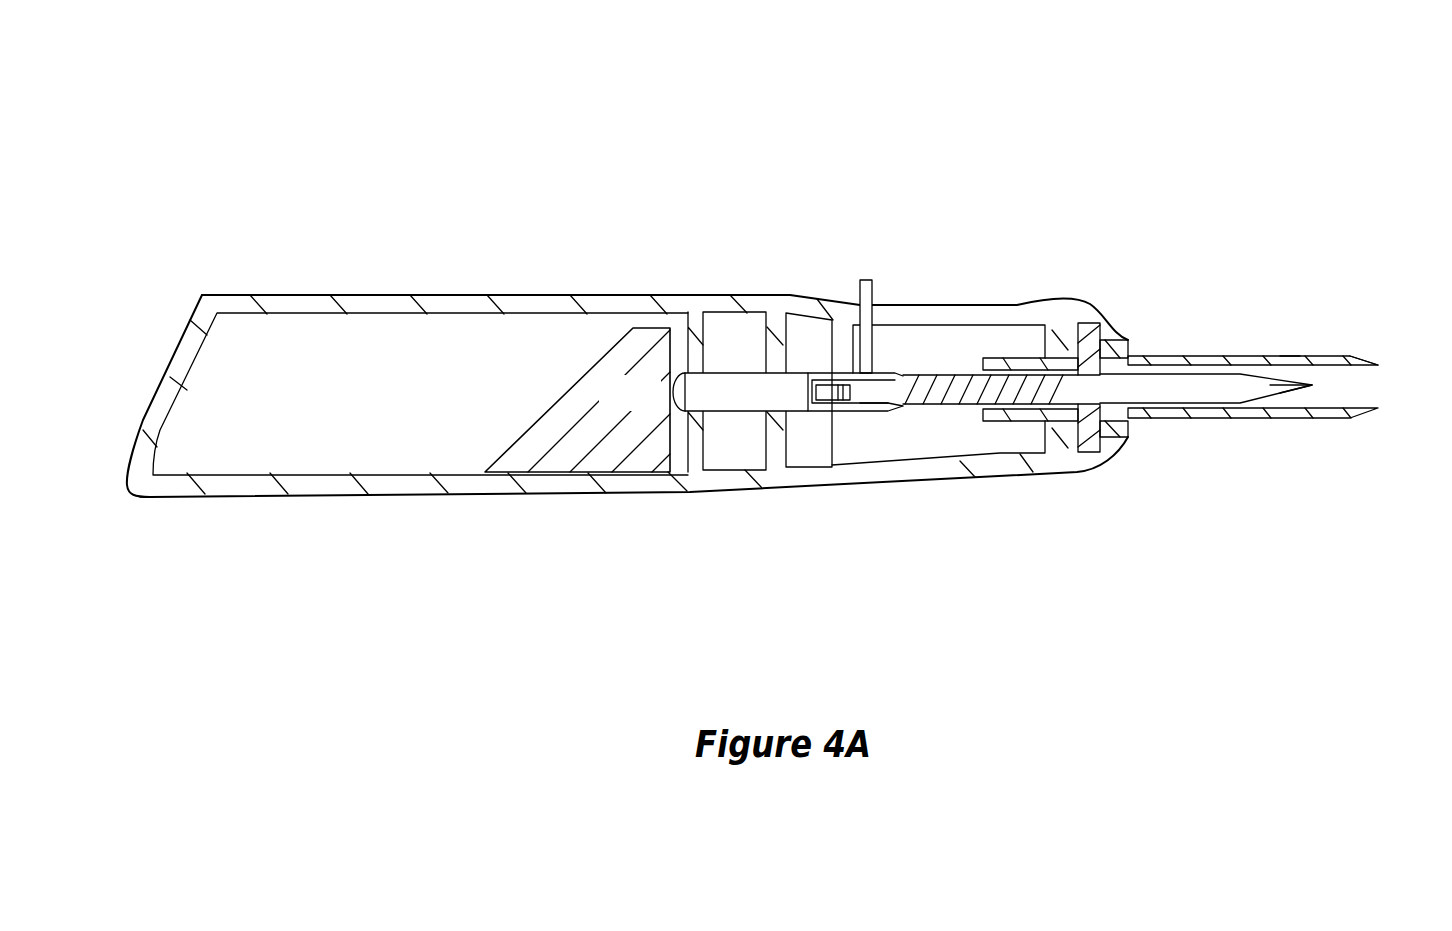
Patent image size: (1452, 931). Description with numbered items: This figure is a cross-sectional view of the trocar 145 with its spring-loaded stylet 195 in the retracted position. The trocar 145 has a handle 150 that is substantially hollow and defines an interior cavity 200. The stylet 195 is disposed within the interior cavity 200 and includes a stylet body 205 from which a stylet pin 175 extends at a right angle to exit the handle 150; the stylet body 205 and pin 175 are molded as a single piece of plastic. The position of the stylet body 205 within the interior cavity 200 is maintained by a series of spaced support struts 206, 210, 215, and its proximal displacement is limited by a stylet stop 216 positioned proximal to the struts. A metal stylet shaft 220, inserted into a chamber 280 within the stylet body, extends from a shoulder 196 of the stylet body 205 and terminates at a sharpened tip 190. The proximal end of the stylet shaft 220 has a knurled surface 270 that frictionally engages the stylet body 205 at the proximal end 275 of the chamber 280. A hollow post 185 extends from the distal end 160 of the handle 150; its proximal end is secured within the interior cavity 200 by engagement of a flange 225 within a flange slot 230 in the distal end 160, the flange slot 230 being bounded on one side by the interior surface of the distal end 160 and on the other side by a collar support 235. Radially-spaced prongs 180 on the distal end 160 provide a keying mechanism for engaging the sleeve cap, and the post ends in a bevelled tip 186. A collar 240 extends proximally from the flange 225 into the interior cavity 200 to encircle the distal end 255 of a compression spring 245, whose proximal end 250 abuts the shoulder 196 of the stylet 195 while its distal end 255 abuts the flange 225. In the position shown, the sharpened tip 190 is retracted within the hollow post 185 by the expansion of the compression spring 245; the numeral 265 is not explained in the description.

The trocar 145 is at (953, 152).
The handle 150 is at (392, 294).
The distal end 160 is at (1113, 447).
The pin 175 is at (868, 282).
The prongs 180 is at (1132, 342).
The hollow post 185 is at (1290, 355).
The bevelled tip 186 is at (1365, 358).
The sharpened tip 190 is at (1293, 393).
The spring-loaded stylet 195 is at (1208, 364).
The shoulder 196 is at (862, 410).
The interior cavity 200 is at (341, 410).
The stylet body 205 is at (759, 406).
The support strut 206 is at (698, 463).
The support strut 210 is at (775, 322).
The support strut 215 is at (843, 343).
The stylet stop 216 is at (655, 408).
The stylet shaft 220 is at (1190, 387).
The flange 225 is at (1088, 323).
The flange slot 230 is at (1087, 447).
The collar support 235 is at (1065, 445).
The collar 240 is at (988, 422).
The compression spring 245 is at (937, 374).
The proximal end of spring 250 is at (898, 372).
The distal end of spring 255 is at (1068, 352).
The hub 265 is at (813, 407).
The knurled surface 270 is at (845, 395).
The proximal end of chamber 275 is at (838, 392).
The chamber 280 is at (849, 410).